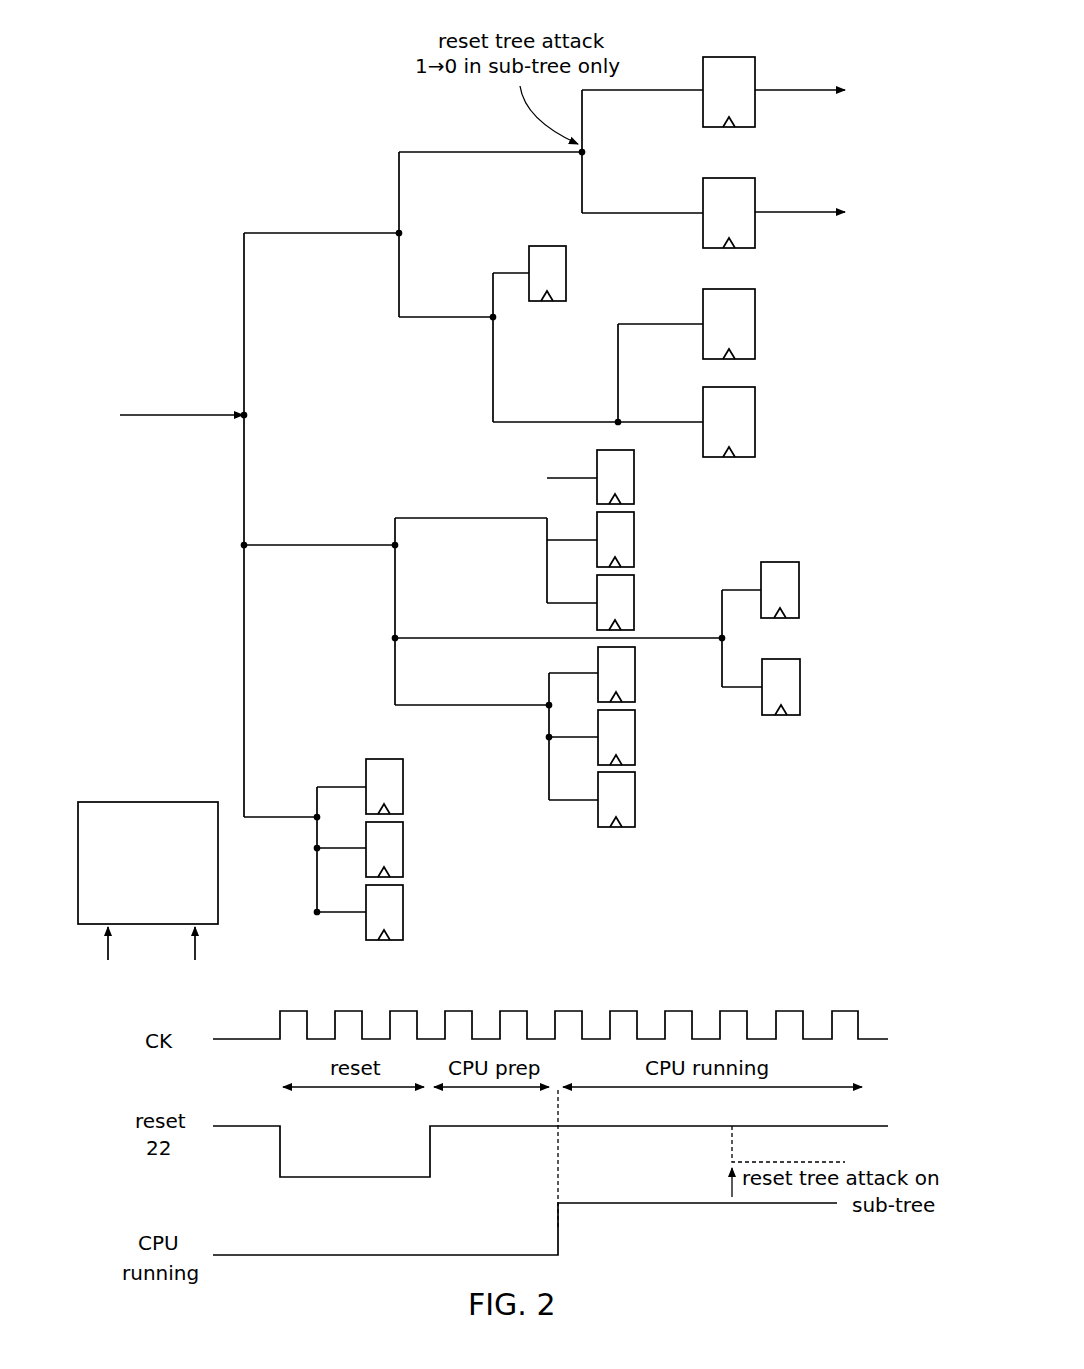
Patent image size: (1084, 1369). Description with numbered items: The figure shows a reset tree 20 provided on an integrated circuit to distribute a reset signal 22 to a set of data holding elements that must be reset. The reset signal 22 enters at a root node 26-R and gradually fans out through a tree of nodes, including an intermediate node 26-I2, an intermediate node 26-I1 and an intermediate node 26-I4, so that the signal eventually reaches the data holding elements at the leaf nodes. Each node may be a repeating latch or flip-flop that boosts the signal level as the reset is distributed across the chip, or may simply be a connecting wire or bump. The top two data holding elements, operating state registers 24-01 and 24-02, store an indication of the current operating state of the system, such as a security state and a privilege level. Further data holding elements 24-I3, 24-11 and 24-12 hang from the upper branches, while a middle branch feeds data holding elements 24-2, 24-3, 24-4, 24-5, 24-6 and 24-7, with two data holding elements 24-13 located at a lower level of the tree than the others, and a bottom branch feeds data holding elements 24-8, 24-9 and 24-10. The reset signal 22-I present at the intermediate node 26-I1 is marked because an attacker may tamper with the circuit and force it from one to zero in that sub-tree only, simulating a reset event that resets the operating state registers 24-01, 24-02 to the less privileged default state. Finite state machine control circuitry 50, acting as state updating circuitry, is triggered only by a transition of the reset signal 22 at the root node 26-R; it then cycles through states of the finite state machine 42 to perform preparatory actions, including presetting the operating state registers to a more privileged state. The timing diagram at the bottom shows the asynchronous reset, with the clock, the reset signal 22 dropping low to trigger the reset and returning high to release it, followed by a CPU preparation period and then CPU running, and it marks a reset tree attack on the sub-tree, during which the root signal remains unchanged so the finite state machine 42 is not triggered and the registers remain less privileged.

The reset tree 20 is at (257, 168).
The reset signal 22 is at (150, 412).
The root node 26-R is at (248, 418).
The intermediate node 26-I2 is at (404, 231).
The reset signal at intermediate node 22-I is at (508, 156).
The intermediate node 26-I1 is at (587, 153).
The operating state register 24-01 is at (745, 40).
The operating state register 24-02 is at (757, 190).
The data holding element 24-I3 is at (568, 275).
The intermediate node 26-I4 is at (497, 320).
The data holding element 24-11 is at (757, 325).
The data holding element 24-12 is at (757, 423).
The data holding element 24-2 is at (636, 478).
The data holding element 24-3 is at (636, 540).
The data holding element 24-4 is at (636, 603).
The data holding element 24-5 is at (637, 673).
The data holding element 24-6 is at (637, 737).
The data holding element 24-7 is at (637, 800).
The data holding element 24-13 is at (800, 590).
The data holding element 24-8 is at (405, 787).
The data holding element 24-9 is at (405, 848).
The data holding element 24-10 is at (405, 912).
The finite state machine control circuitry 50 is at (150, 800).
The finite state machine 42 is at (105, 945).